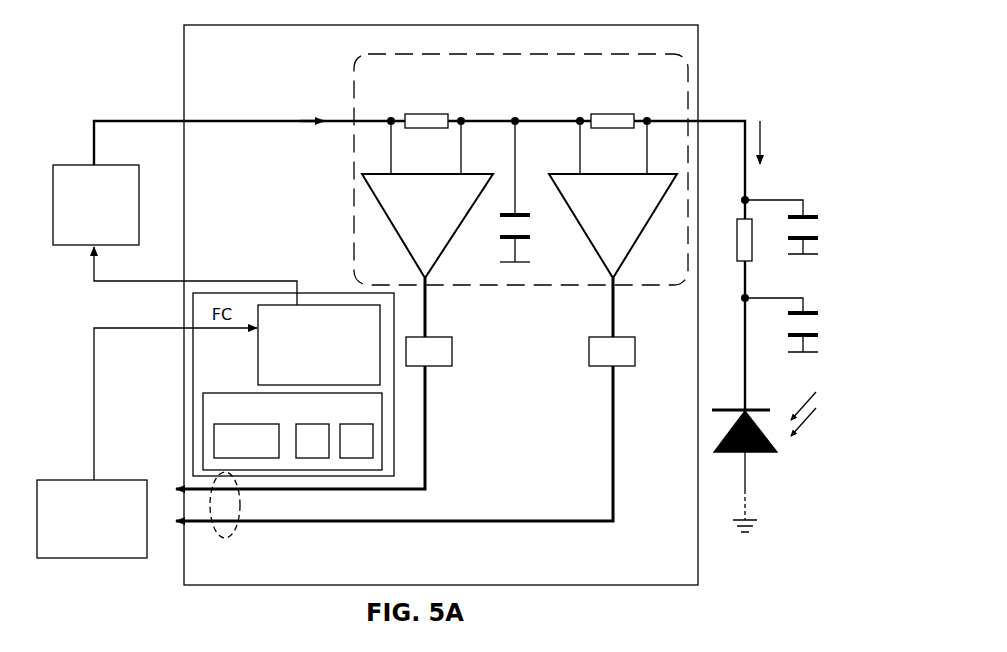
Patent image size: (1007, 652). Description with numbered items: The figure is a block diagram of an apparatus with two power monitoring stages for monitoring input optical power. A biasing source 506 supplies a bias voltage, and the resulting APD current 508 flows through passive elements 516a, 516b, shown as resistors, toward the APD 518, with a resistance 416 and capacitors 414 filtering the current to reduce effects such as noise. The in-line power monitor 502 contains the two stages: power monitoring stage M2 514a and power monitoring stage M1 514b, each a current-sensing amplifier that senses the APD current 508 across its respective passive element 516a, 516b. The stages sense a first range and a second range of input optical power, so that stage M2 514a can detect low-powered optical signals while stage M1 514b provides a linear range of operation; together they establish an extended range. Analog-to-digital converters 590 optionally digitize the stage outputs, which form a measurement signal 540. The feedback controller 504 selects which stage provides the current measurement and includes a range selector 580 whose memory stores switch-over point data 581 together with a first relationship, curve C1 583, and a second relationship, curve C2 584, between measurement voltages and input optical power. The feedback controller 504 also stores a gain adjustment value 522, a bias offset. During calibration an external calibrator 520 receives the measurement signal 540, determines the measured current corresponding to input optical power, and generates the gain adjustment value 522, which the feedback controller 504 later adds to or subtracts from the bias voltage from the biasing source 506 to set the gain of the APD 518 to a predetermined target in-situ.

The in-line power monitor 502 is at (354, 80).
The feedback controller 504 is at (326, 305).
The biasing source 506 is at (53, 192).
The APD current 508 is at (762, 121).
The capacitors 414 is at (818, 216).
The resistance 416 is at (737, 236).
The power monitoring stage M2 514a is at (418, 268).
The power monitoring stage M1 514b is at (598, 264).
The passive element 516a is at (440, 114).
The passive element 516b is at (615, 114).
The APD 518 is at (735, 453).
The external calibrator 520 is at (75, 480).
The gain adjustment value 522 is at (258, 352).
The measurement signal 540 is at (232, 538).
The range selector 580 is at (244, 392).
The switch-over point data 581 is at (214, 448).
The curve C1 583 is at (303, 458).
The curve C2 584 is at (353, 458).
The analog-to-digital converters 590 is at (452, 358).